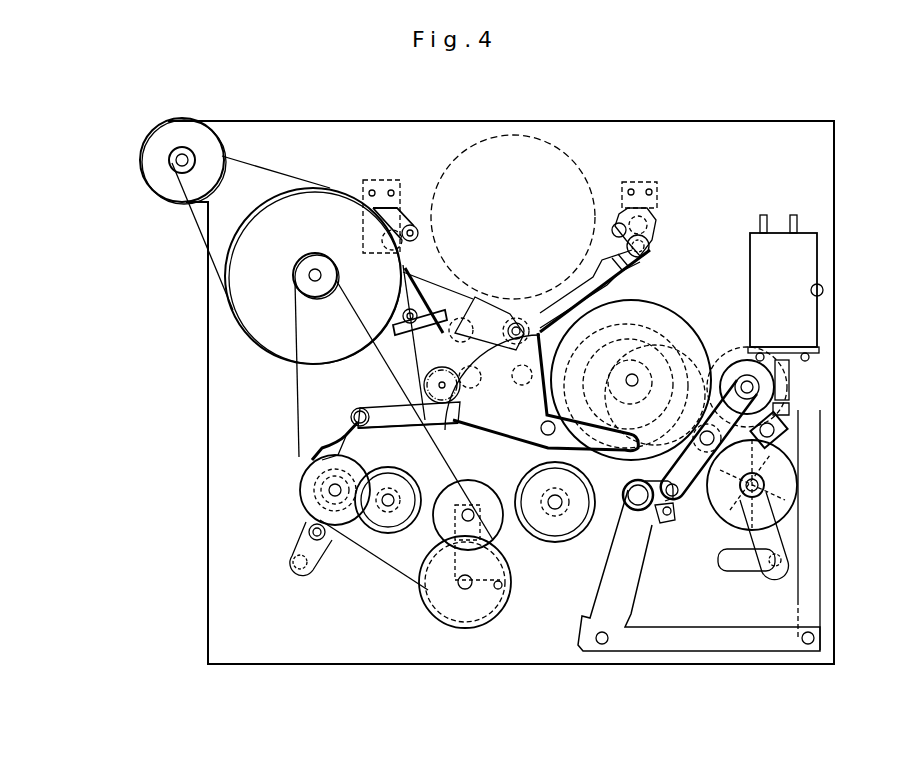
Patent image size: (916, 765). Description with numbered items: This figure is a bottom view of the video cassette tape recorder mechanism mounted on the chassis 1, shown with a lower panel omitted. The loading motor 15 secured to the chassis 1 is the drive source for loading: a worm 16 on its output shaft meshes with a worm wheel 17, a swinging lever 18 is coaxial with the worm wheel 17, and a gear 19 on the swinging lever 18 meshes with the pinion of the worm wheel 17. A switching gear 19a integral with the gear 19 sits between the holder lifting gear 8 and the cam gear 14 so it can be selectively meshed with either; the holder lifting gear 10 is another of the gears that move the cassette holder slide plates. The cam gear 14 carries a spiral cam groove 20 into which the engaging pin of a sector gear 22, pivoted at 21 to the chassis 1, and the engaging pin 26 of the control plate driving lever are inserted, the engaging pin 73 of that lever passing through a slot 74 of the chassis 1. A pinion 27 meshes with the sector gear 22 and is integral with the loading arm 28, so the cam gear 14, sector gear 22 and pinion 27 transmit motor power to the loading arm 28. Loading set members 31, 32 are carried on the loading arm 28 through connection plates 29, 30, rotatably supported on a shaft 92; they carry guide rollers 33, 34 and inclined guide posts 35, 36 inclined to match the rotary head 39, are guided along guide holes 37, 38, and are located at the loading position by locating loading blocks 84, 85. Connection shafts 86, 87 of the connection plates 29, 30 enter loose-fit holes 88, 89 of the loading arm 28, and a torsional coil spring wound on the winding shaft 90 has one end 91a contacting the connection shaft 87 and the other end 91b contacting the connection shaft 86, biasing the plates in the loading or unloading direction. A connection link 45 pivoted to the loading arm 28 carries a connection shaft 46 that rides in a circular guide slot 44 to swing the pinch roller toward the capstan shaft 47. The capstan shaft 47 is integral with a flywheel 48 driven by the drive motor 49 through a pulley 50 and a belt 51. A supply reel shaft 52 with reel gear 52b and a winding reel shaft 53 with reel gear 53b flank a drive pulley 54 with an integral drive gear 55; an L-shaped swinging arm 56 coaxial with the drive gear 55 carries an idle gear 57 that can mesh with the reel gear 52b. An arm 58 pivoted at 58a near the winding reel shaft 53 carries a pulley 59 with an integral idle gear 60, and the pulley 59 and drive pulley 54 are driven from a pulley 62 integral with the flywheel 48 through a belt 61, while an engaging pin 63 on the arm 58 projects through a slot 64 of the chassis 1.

The chassis 1 is at (838, 165).
The holder lifting gear 8 is at (790, 515).
The holder lifting gear 10 is at (790, 445).
The cam gear 14 is at (632, 320).
The loading motor 15 is at (826, 250).
The worm 16 is at (805, 375).
The worm wheel 17 is at (800, 402).
The swinging lever 18 is at (740, 362).
The gear 19 is at (800, 477).
The switching gear 19a is at (790, 500).
The spiral cam groove 20 is at (626, 386).
The pivot 21 is at (545, 452).
The sector gear 22 is at (496, 430).
The engaging pin 26 is at (670, 340).
The pinion 27 is at (470, 388).
The loading arm 28 is at (510, 325).
The connection plate 29 is at (590, 268).
The connection plate 30 is at (430, 270).
The loading set member 31 is at (655, 250).
The loading set member 32 is at (408, 225).
The guide roller 33 is at (645, 212).
The guide roller 34 is at (412, 222).
The inclined guide post 35 is at (612, 228).
The inclined guide post 36 is at (412, 245).
The guide hole 37 is at (650, 268).
The guide hole 38 is at (480, 300).
The rotary head 39 is at (508, 135).
The circular guide slot 44 is at (335, 445).
The connection link 45 is at (420, 418).
The connection shaft 46 is at (360, 408).
The capstan shaft 47 is at (300, 276).
The flywheel 48 is at (268, 216).
The drive motor 49 is at (160, 176).
The pulley 50 is at (182, 135).
The belt 51 is at (196, 230).
The supply reel shaft 52 is at (540, 538).
The reel gear 52b is at (568, 520).
The winding reel shaft 53 is at (388, 508).
The reel gear 53b is at (370, 530).
The drive pulley 54 is at (468, 622).
The drive gear 55 is at (500, 612).
The L-shaped swinging arm 56 is at (418, 530).
The idle gear 57 is at (496, 500).
The arm 58 is at (306, 530).
The pivot 58a is at (330, 560).
The pulley 59 is at (305, 470).
The idle gear 60 is at (322, 473).
The belt 61 is at (288, 322).
The pulley 62 is at (310, 260).
The engaging pin 63 is at (304, 572).
The slot 64 is at (292, 560).
The engaging pin 73 is at (790, 568).
The slot 74 is at (748, 568).
The locating loading block 84 is at (636, 182).
The locating loading block 85 is at (380, 180).
The connection shaft 86 is at (518, 324).
The connection shaft 87 is at (400, 310).
The loose-fit hole 88 is at (520, 320).
The loose-fit hole 89 is at (425, 302).
The winding shaft 90 is at (438, 373).
The spring end 91a is at (398, 360).
The spring end 91b is at (541, 430).
The shaft 92 is at (380, 248).